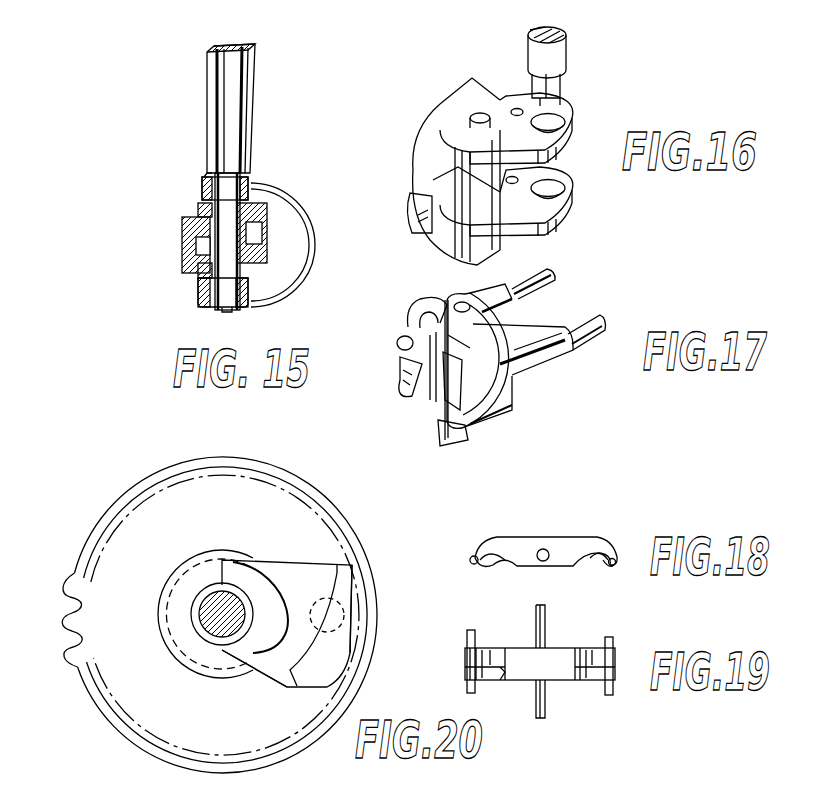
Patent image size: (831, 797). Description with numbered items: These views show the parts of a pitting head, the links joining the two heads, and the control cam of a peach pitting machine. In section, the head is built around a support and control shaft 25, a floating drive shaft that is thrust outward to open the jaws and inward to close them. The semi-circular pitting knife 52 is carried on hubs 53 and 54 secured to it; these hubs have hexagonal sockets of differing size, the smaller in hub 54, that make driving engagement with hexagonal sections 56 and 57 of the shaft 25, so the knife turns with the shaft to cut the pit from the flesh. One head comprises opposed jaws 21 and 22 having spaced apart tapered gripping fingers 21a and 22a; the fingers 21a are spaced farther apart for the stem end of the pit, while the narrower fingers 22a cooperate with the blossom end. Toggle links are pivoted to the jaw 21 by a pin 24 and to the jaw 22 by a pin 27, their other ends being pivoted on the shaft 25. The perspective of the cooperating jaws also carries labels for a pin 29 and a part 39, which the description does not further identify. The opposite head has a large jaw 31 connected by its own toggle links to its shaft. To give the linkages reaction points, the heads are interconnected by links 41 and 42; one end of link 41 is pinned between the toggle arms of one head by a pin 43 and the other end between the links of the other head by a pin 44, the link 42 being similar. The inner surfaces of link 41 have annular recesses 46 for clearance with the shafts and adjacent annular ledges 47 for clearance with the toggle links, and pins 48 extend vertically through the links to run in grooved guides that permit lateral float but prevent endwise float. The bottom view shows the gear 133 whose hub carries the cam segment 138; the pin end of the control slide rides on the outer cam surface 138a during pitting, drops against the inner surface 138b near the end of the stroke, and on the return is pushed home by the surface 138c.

In FIG. 15, the support and control shaft 25 is at (251, 128).
In FIG. 16, the support and control shaft 25 is at (528, 50).
In FIG. 15, the hexagonal section 56 is at (206, 174).
In FIG. 15, the hub 53 is at (202, 189).
In FIG. 15, the connecting reaction link 41 is at (182, 248).
In FIG. 18, the connecting reaction link 41 is at (575, 540).
In FIG. 15, the connecting link 42 is at (267, 236).
In FIG. 15, the pitting knife 52 is at (320, 252).
In FIG. 15, the hub 54 is at (198, 294).
In FIG. 15, the hexagonal section 57 is at (222, 312).
In FIG. 16, the large jaw 31 is at (440, 104).
In FIG. 16, the pin 24 is at (480, 113).
In FIG. 17, the pin 27 is at (452, 290).
In FIG. 17, the jaw 22 is at (436, 296).
In FIG. 17, the tapered gripping fingers 22a is at (410, 330).
In FIG. 17, the lower pin 29 is at (582, 340).
In FIG. 17, the shank 39 is at (551, 375).
In FIG. 17, the jaw 21 is at (507, 422).
In FIG. 17, the tapered gripping fingers 21a is at (462, 440).
In FIG. 18, the pin 44 is at (470, 559).
In FIG. 18, the pin 43 is at (614, 557).
In FIG. 18, the annular recess 46 is at (608, 568).
In FIG. 19, the pin 48 is at (546, 625).
In FIG. 19, the annular ledge 47 is at (508, 681).
In FIG. 20, the gear 133 is at (86, 634).
In FIG. 20, the cam segment 138 is at (330, 563).
In FIG. 20, the cam surface 138c is at (320, 612).
In FIG. 20, the outer cam surface 138a is at (348, 670).
In FIG. 20, the inner surface 138b is at (255, 673).